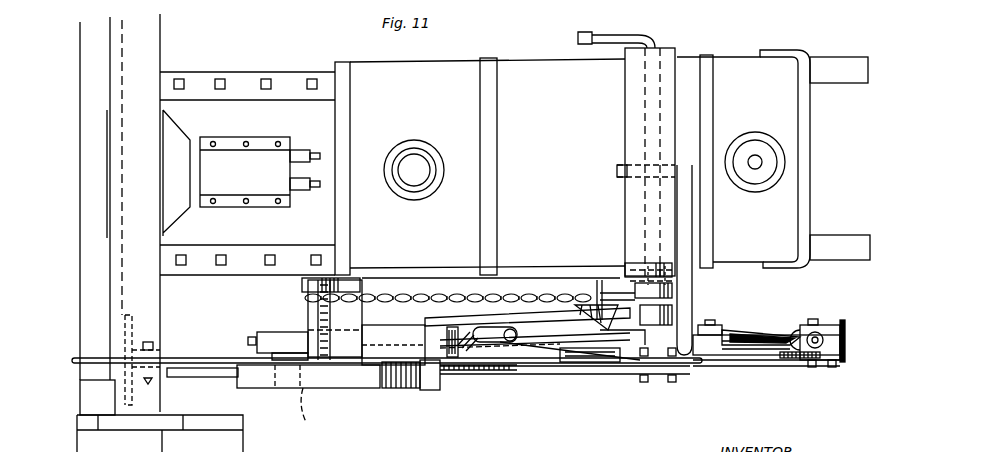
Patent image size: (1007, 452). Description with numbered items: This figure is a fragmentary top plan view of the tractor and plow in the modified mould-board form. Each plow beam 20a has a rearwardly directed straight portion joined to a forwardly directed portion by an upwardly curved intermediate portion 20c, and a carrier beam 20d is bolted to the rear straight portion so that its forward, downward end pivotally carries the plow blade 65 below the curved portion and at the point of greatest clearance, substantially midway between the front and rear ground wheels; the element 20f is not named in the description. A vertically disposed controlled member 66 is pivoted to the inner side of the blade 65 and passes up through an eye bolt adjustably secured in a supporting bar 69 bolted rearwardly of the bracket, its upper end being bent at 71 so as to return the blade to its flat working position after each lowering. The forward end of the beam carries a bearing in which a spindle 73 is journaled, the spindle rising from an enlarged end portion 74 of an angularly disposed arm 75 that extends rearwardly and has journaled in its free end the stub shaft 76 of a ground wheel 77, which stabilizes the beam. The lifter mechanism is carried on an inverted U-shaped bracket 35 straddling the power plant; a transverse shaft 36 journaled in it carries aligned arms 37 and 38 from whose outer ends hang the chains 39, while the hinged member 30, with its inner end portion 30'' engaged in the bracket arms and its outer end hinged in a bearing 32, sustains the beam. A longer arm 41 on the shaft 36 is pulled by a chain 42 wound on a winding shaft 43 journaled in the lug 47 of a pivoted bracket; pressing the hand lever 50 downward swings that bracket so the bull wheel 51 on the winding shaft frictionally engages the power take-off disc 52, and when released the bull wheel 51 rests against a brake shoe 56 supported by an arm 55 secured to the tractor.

The plow beam 20a is at (178, 373).
The intermediate curved portion 20c is at (598, 369).
The carrier beam 20d is at (228, 362).
The rail 20f is at (740, 357).
The hinged member 30 is at (708, 260).
The inner end portion 30'' is at (602, 177).
The bearing 32 is at (660, 365).
The inverted U-shaped bracket 35 is at (665, 58).
The transversely extending shaft 36 is at (650, 122).
The arm 37 is at (690, 306).
The arm 38 is at (616, 34).
The chain 39 is at (594, 298).
The longer arm 41 is at (672, 292).
The chain 42 is at (386, 297).
The winding shaft 43 is at (312, 306).
The ear or lug 47 is at (302, 284).
The hand lever 50 is at (172, 359).
The bull wheel 51 is at (372, 374).
The power take-off disc 52 is at (323, 405).
The arm 55 is at (376, 338).
The brake shoe 56 is at (392, 390).
The plow blade 65 is at (495, 451).
The controlled member 66 is at (497, 335).
The supporting bar 69 is at (540, 320).
The angularly bent portion 71 is at (490, 343).
The spindle 73 is at (812, 336).
The enlarged end portion 74 is at (845, 338).
The angularly disposed arm 75 is at (780, 360).
The stub shaft 76 is at (712, 322).
The ground wheel 77 is at (771, 330).